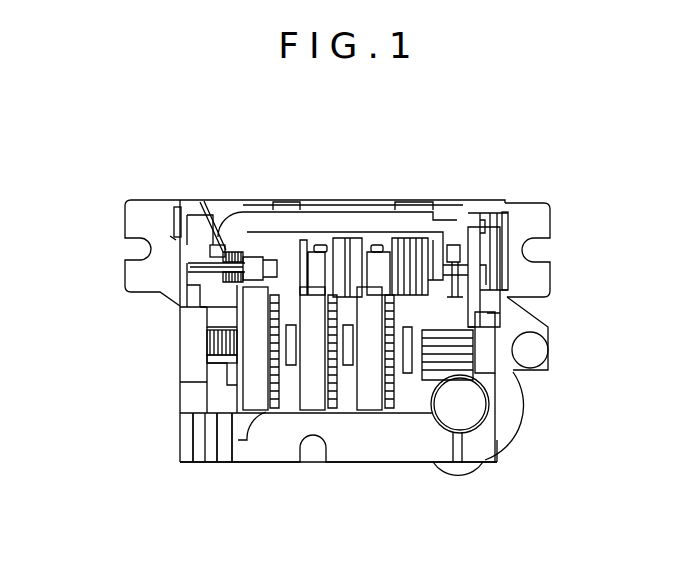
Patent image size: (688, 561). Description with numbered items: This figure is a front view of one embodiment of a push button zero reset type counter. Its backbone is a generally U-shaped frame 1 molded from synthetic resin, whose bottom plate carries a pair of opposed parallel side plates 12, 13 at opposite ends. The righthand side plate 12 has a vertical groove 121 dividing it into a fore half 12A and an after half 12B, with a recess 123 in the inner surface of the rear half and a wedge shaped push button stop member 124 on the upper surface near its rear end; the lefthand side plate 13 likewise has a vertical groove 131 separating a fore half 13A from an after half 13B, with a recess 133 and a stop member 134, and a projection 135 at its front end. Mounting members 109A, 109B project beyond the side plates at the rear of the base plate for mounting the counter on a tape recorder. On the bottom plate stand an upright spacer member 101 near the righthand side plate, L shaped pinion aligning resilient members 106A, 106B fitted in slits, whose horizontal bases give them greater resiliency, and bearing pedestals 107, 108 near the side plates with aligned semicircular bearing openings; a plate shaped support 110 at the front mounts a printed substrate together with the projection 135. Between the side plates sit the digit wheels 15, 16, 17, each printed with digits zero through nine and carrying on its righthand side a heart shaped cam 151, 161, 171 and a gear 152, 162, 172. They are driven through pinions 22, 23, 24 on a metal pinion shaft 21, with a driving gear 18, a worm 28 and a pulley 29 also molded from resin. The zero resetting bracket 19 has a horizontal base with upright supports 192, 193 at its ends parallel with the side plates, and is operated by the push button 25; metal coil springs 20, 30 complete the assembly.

The frame 1 is at (158, 430).
The side plate 12 is at (492, 373).
The fore half 12A is at (485, 343).
The after half 12B is at (487, 213).
The side plate 13 is at (185, 368).
The fore half 13A is at (186, 328).
The after half 13B is at (210, 251).
The digit wheel 15 is at (370, 412).
The digit wheel 16 is at (313, 412).
The digit wheel 17 is at (255, 412).
The driving gear 18 is at (452, 440).
The zero resetting bracket 19 is at (330, 226).
The coil spring 20 is at (212, 205).
The pinion shaft 21 is at (200, 267).
The pinion 22 is at (415, 245).
The pinion 23 is at (378, 246).
The pinion 24 is at (282, 236).
The push button 25 is at (540, 332).
The worm 28 is at (492, 433).
The pulley 29 is at (513, 408).
The coil spring 30 is at (212, 340).
The spacer member 101 is at (440, 412).
The pinion aligning resilient member 106A is at (385, 237).
The pinion aligning resilient member 106B is at (323, 233).
The bearing pedestal 107 is at (455, 252).
The bearing pedestal 108 is at (173, 240).
The mounting member 109A is at (545, 222).
The mounting member 109B is at (130, 222).
The support 110 is at (228, 452).
The vertical groove 121 is at (497, 278).
The recess 123 is at (497, 255).
The push button stop member 124 is at (505, 222).
The vertical groove 131 is at (187, 300).
The recess 133 is at (192, 213).
The push button stop member 134 is at (177, 222).
The projection 135 is at (198, 452).
The heart shaped cam 151 is at (412, 412).
The gear 152 is at (389, 412).
The heart shaped cam 161 is at (347, 412).
The gear 162 is at (332, 412).
The heart shaped cam 171 is at (290, 412).
The gear 172 is at (274, 412).
The upright support 192 is at (453, 233).
The upright support 193 is at (250, 234).